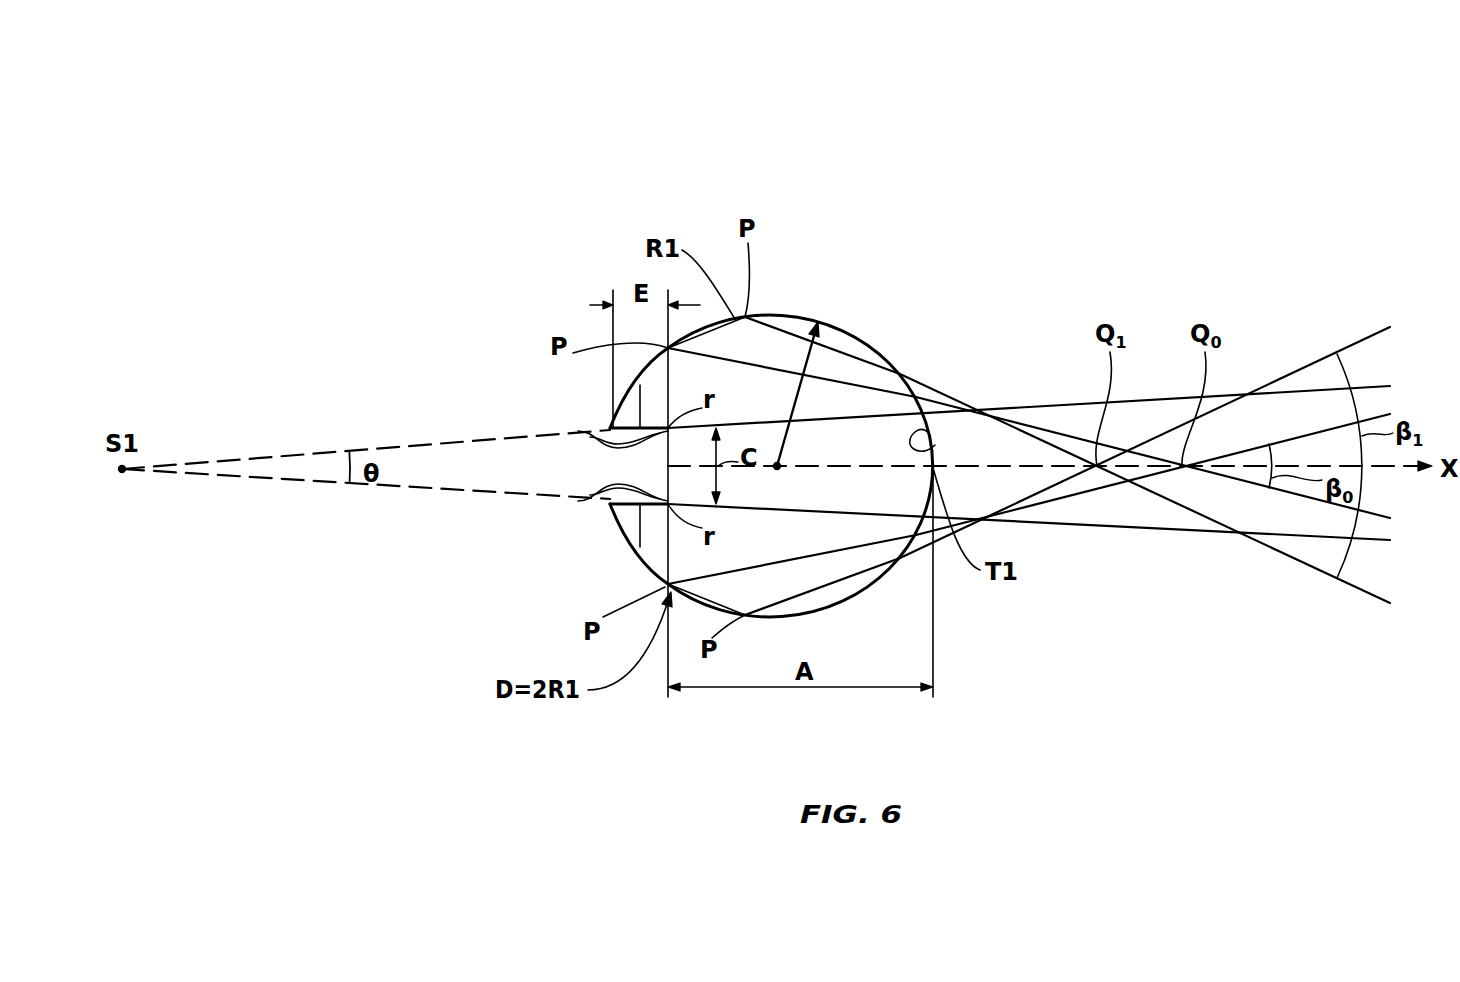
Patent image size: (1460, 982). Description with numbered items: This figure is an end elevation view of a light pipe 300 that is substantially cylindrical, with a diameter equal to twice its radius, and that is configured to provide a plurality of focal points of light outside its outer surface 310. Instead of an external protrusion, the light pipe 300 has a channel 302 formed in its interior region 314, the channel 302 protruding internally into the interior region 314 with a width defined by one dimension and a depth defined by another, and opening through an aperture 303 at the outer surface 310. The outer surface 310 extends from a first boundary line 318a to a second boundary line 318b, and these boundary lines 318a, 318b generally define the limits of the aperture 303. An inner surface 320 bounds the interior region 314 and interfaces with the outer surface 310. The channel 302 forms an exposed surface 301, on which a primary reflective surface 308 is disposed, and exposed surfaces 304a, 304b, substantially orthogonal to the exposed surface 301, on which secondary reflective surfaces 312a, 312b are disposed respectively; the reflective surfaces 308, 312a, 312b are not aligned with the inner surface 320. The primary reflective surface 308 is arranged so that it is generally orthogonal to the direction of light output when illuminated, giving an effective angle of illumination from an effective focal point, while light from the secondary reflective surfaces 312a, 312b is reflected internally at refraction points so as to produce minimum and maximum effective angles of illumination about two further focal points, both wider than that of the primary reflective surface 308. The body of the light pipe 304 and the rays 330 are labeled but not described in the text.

The light pipe 300 is at (1150, 168).
The exposed surface 301 is at (665, 458).
The channel 302 is at (612, 450).
The aperture 303 is at (665, 450).
The lens 304 is at (681, 437).
The exposed surface 304a is at (612, 441).
The exposed surface 304b is at (612, 508).
The primary reflective surface 308 is at (603, 493).
The outer surface 310 is at (878, 350).
The secondary reflective surface 312a is at (600, 431).
The secondary reflective surface 312b is at (607, 503).
The interior region 314 is at (813, 408).
The first boundary line 318a is at (611, 427).
The second boundary line 318b is at (603, 507).
The inner surface 320 is at (935, 445).
The light rays 330 is at (900, 374).